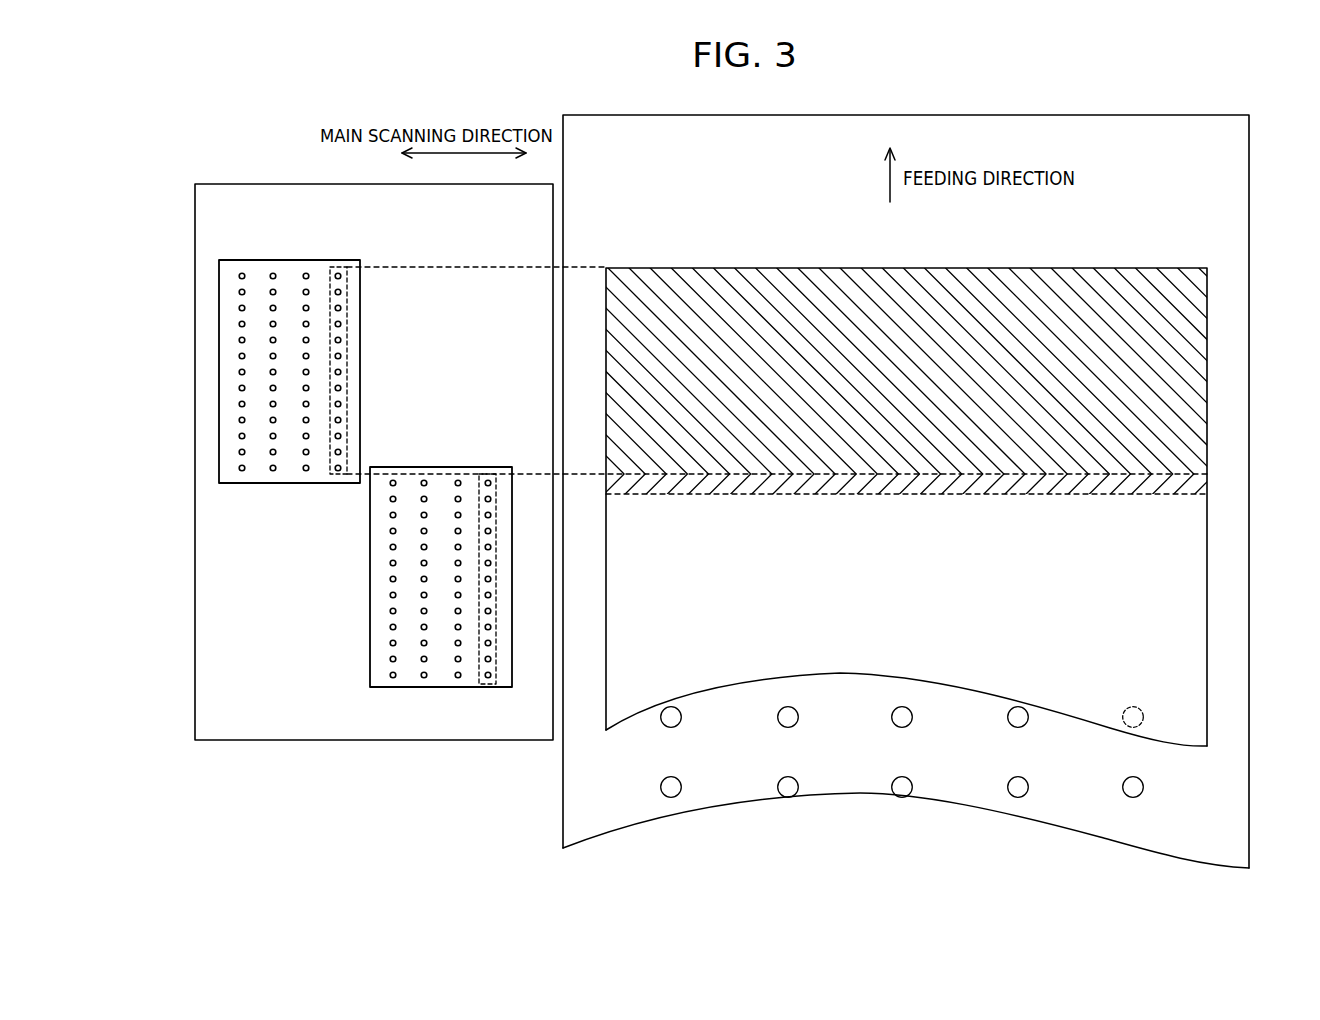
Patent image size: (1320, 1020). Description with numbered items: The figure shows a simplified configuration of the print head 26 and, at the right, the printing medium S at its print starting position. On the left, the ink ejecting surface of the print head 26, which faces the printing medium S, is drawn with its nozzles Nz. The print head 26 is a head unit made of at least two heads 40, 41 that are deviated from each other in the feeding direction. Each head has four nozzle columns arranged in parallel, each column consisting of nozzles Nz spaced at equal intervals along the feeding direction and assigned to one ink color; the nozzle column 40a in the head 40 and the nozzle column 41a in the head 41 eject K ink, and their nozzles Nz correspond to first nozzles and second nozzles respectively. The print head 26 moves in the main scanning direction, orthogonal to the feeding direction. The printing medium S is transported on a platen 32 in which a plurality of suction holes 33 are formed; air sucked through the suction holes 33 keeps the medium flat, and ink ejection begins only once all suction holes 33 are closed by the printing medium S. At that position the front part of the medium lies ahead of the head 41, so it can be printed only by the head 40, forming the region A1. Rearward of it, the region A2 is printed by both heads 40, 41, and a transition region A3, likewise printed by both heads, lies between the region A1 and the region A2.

The print head 26 is at (313, 183).
The head 40 is at (279, 260).
The nozzle column 40a is at (367, 343).
The head 41 is at (369, 540).
The nozzle column 41a is at (497, 525).
The nozzles Nz is at (340, 340).
The printing medium S is at (1129, 266).
The region A1 is at (753, 275).
The region A2 is at (1058, 698).
The transition region A3 is at (1196, 490).
The platen 32 is at (596, 824).
The suction holes 33 is at (786, 720).